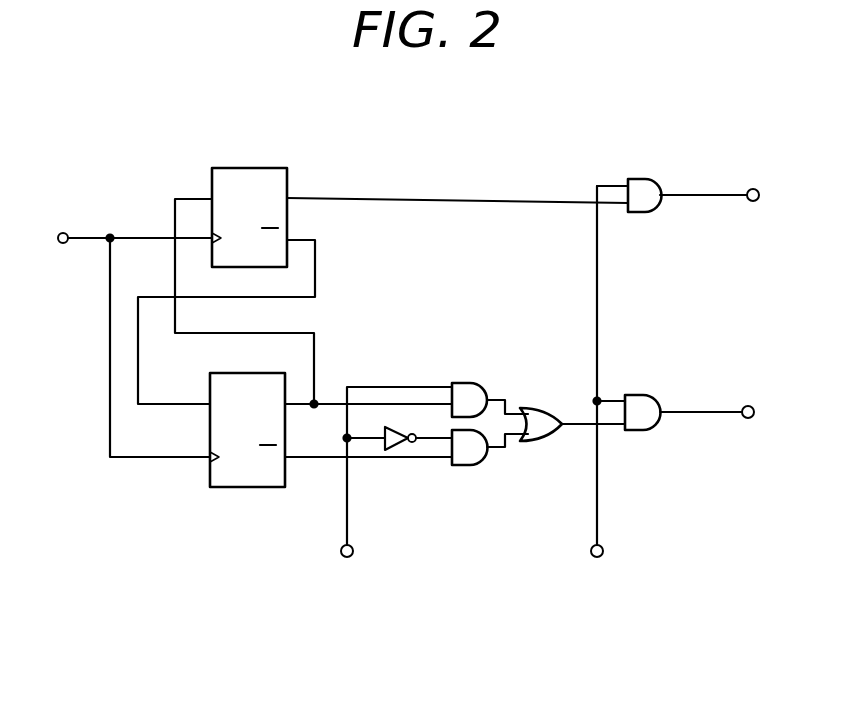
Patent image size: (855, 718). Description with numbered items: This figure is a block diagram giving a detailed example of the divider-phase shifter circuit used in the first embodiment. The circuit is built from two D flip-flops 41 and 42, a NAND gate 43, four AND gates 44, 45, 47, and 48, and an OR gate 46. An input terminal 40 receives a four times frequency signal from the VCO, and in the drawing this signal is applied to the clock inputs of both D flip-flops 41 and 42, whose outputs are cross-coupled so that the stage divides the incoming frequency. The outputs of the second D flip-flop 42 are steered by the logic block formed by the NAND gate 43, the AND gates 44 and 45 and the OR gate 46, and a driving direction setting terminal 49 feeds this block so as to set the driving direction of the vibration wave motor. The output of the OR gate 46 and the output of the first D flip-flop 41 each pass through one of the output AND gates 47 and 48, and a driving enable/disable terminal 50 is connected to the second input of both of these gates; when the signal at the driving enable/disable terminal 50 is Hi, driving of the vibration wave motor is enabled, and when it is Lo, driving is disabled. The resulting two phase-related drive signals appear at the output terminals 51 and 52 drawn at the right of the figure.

The input terminal 40 is at (62, 244).
The D flip-flop 41 is at (268, 167).
The D flip-flop 42 is at (265, 488).
The NAND gate 43 is at (400, 451).
The AND gate 44 is at (476, 383).
The AND gate 45 is at (478, 466).
The OR gate 46 is at (540, 407).
The AND gate 47 is at (647, 178).
The AND gate 48 is at (648, 394).
The driving direction setting terminal 49 is at (353, 555).
The driving enable/disable terminal 50 is at (603, 556).
The first output terminal 51 is at (758, 190).
The second output terminal 52 is at (754, 407).